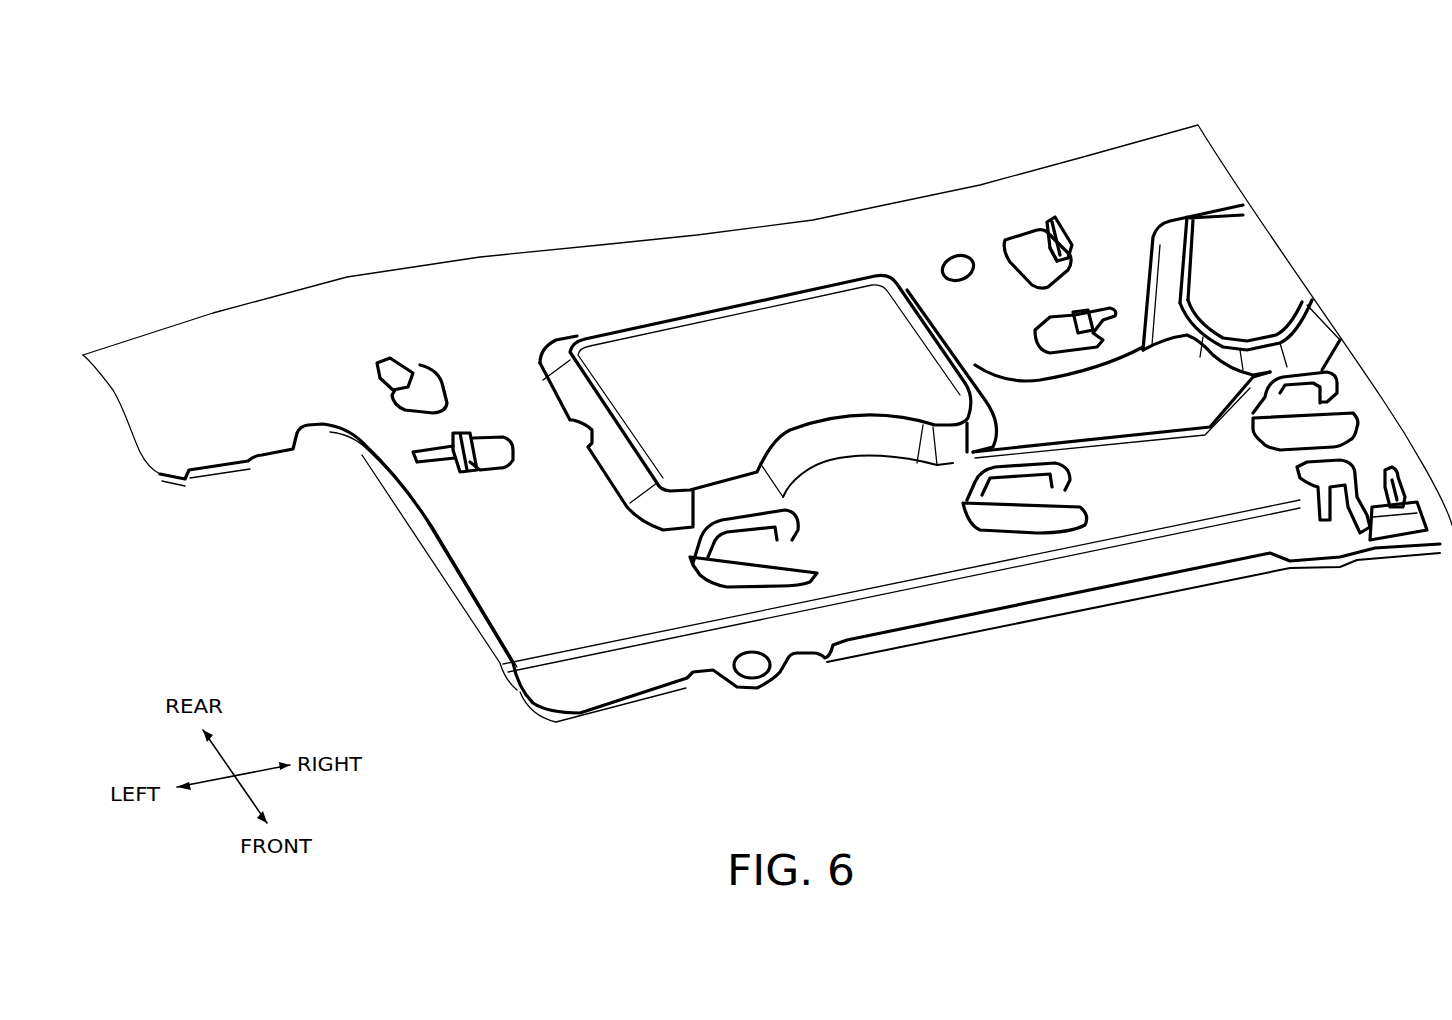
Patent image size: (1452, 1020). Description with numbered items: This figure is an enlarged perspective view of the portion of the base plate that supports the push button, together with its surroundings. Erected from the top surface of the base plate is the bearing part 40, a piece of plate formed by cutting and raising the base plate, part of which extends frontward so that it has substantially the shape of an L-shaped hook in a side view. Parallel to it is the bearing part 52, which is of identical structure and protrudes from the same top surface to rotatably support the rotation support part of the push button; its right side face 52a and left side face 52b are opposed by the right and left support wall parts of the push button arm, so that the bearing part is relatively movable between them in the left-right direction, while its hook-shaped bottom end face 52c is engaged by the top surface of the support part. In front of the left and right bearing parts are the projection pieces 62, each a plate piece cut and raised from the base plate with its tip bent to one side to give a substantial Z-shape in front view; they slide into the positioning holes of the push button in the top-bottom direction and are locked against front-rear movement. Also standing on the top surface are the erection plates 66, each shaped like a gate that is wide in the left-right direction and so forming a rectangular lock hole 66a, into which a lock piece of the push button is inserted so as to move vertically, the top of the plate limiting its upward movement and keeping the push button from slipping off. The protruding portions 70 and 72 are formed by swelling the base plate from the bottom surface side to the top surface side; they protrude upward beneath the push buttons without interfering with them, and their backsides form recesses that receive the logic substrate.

The bearing part 40 is at (380, 373).
The bearing part 52 is at (1067, 168).
The right side face 52a is at (1060, 255).
The left side face 52b is at (1013, 233).
The bottom end face 52c is at (1067, 257).
The projection piece 62 is at (467, 433).
The erection plate 66 is at (888, 622).
The lock hole 66a is at (727, 548).
The protruding portion 70 is at (693, 350).
The protruding portion 72 is at (1222, 253).